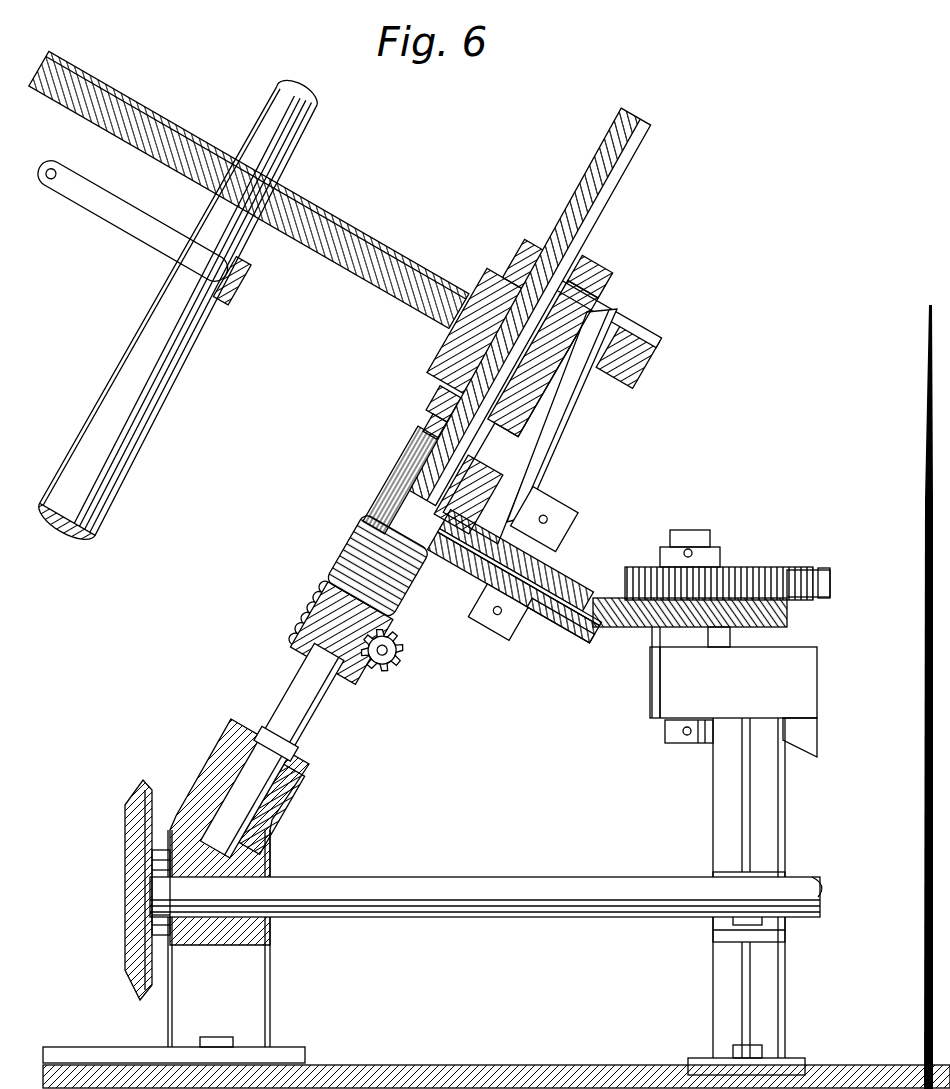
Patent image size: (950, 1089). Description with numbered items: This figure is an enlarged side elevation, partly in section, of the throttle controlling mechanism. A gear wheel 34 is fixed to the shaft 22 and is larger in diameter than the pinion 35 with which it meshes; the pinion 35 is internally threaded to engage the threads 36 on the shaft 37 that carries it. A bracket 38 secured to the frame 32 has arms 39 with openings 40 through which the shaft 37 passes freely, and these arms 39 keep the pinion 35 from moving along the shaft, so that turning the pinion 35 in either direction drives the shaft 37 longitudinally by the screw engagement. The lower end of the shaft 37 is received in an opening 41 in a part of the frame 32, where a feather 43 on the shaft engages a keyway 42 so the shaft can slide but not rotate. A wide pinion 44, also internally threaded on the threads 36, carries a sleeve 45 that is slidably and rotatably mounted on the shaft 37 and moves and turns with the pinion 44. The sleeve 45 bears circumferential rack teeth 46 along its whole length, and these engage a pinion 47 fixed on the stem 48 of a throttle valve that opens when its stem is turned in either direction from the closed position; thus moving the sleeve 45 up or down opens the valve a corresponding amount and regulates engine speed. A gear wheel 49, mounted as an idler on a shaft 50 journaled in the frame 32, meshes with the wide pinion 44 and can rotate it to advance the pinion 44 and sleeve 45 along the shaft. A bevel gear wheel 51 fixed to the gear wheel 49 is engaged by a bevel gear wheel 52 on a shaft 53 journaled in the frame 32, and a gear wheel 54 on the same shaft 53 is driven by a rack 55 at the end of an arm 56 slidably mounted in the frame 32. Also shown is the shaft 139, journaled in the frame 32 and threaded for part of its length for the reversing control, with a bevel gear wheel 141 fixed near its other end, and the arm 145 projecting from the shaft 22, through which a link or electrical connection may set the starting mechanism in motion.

The shaft 22 is at (322, 123).
The frame 32 is at (640, 356).
The gear wheel 34 is at (372, 236).
The pinion 35 is at (432, 358).
The threads 36 is at (628, 205).
The shaft 37 is at (592, 243).
The bracket 38 is at (568, 403).
The arms 39 is at (582, 286).
The openings 40 is at (586, 262).
The opening 41 is at (216, 770).
The keyway 42 is at (300, 790).
The feather 43 is at (302, 756).
The wide pinion 44 is at (378, 503).
The sleeve 45 is at (314, 596).
The circumferential rack teeth 46 is at (340, 550).
The pinion 47 is at (400, 645).
The stem 48 is at (398, 662).
The gear wheel 49 is at (420, 603).
The shaft 50 is at (566, 508).
The bevel gear wheel 51 is at (576, 572).
The bevel gear wheel 52 is at (636, 627).
The shaft 53 is at (705, 535).
The gear wheel 54 is at (725, 575).
The rack 55 is at (785, 581).
The arm 56 is at (816, 598).
The shaft 139 is at (517, 888).
The bevel gear wheel 141 is at (130, 800).
The arm 145 is at (112, 214).